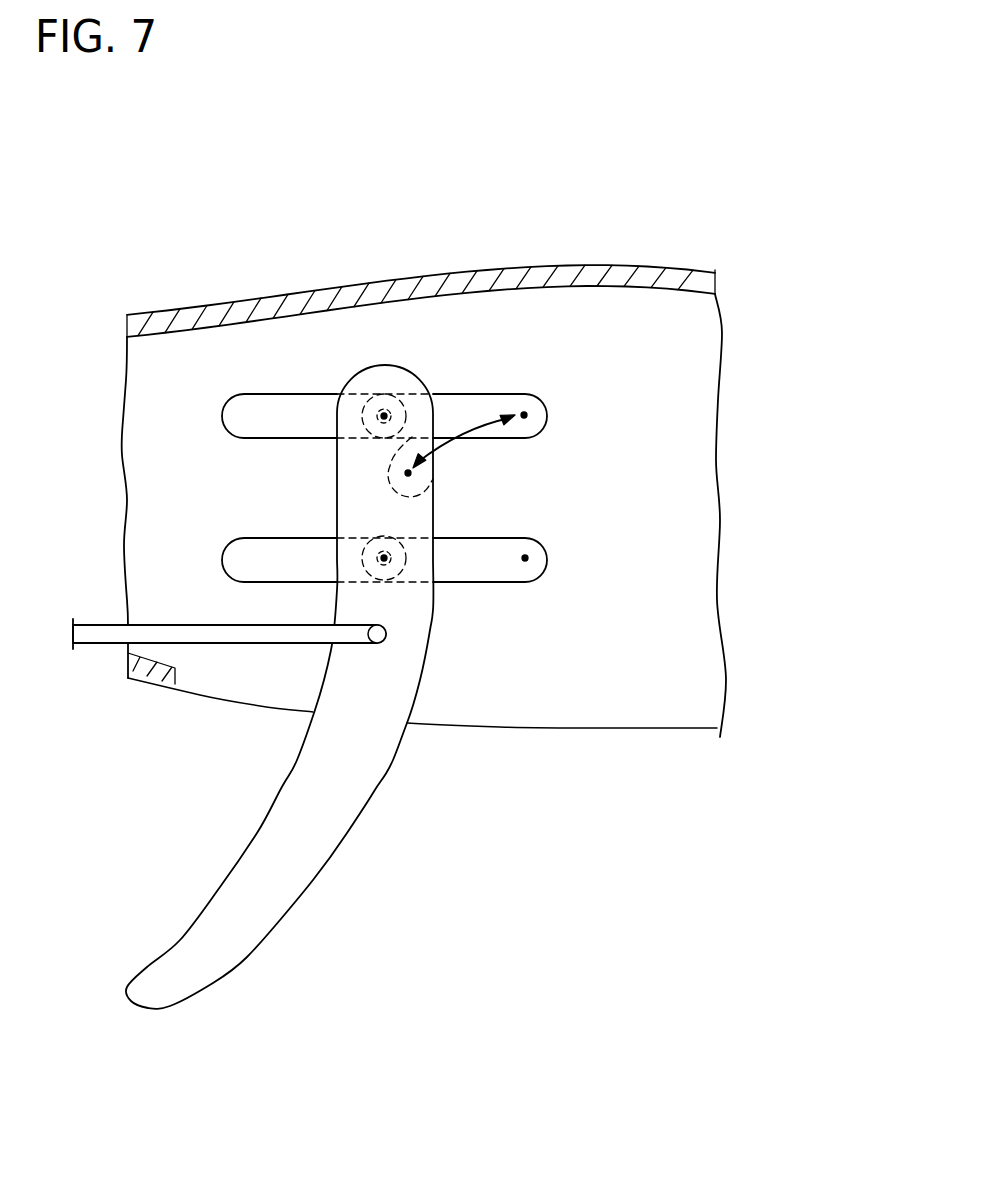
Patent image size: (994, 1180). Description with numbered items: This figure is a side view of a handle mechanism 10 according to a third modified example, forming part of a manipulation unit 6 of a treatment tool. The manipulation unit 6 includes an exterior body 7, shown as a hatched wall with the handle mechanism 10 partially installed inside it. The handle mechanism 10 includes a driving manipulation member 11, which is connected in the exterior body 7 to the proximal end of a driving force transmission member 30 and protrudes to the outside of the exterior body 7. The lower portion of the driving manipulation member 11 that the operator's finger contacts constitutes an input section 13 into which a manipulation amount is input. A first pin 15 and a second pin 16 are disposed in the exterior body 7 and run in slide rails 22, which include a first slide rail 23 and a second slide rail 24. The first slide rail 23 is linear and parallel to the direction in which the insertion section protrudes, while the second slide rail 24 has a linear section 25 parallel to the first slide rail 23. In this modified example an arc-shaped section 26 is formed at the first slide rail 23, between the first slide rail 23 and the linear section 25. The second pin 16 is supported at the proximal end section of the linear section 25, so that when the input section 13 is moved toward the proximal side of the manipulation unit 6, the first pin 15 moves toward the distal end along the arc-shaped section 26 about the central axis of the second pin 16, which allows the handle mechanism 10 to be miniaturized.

The manipulation unit 6 is at (470, 557).
The exterior body 7 is at (488, 275).
The handle mechanism 10 is at (625, 333).
The driving manipulation member 11 is at (325, 832).
The input section 13 is at (269, 687).
The first pin 15 is at (386, 414).
The second pin 16 is at (390, 561).
The slide rails 22 is at (544, 477).
The first slide rail 23 is at (540, 400).
The second slide rail 24 is at (518, 548).
The linear section 25 is at (525, 558).
The arc-shaped section 26 is at (463, 442).
The driving force transmission member 30 is at (233, 633).